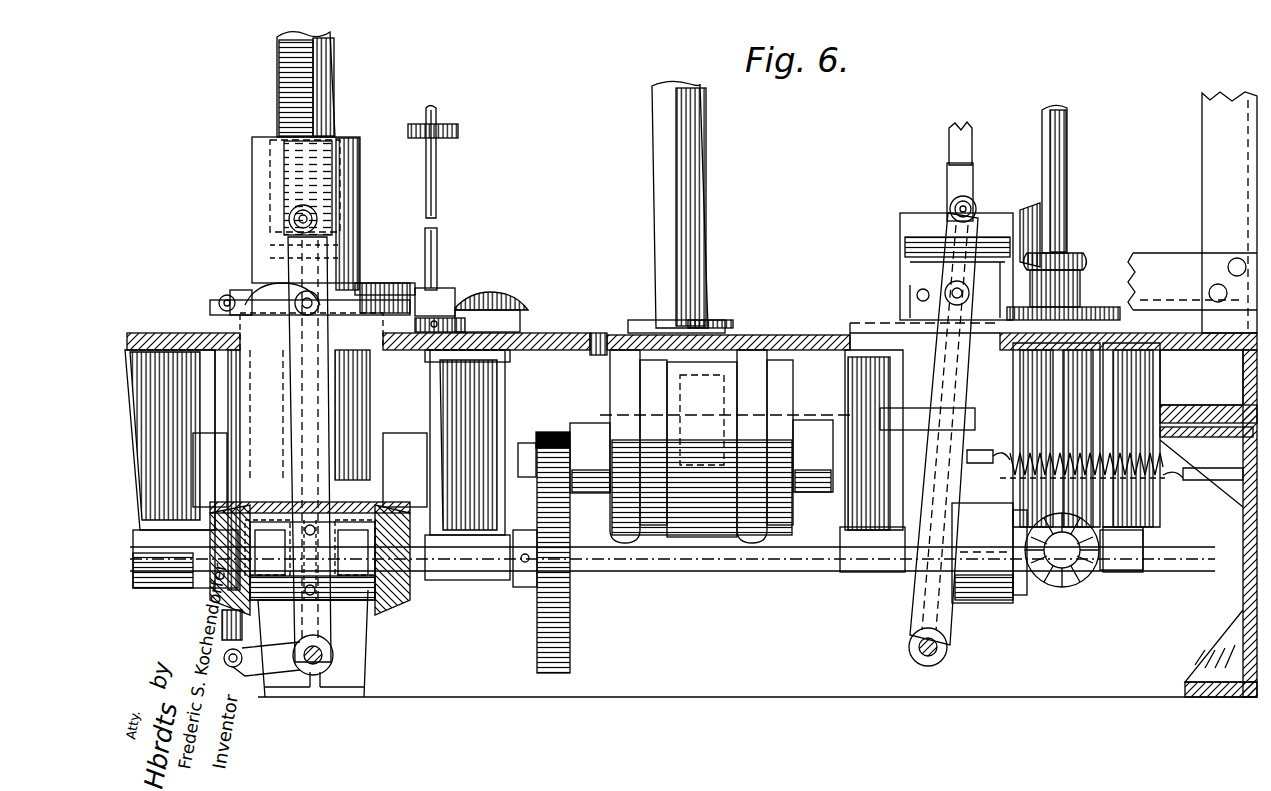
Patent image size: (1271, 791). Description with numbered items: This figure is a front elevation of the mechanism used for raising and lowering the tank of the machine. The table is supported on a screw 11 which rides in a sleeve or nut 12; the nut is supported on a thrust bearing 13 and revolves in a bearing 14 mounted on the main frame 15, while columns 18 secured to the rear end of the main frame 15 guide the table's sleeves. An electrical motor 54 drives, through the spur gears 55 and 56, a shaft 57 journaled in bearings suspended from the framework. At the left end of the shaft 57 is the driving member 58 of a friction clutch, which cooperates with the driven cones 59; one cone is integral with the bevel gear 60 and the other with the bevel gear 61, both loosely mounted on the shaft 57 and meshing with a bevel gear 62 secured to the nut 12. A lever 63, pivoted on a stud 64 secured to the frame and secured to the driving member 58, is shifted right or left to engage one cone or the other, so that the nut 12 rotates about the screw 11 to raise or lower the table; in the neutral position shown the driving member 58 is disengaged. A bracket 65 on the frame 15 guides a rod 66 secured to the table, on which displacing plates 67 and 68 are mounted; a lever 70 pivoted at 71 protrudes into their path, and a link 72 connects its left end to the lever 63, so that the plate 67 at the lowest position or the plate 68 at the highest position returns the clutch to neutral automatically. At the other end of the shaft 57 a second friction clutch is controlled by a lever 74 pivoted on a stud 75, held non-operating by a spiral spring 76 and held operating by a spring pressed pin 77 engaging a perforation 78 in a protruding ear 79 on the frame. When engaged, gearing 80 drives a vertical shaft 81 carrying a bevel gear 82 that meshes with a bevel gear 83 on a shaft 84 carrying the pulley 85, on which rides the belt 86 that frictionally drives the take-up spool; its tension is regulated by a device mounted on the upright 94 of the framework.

The screw 11 is at (275, 84).
The sleeve or nut 12 is at (255, 173).
The thrust bearing 13 is at (248, 300).
The bearing 14 is at (430, 380).
The main frame 15 is at (545, 333).
The column 18 is at (705, 178).
The electrical motor 54 is at (770, 350).
The spur gear 55 is at (549, 434).
The spur gear 56 is at (572, 607).
The shaft 57 is at (718, 572).
The driving member 58 is at (245, 505).
The driven cones 59 is at (268, 576).
The bevel gear 60 is at (390, 604).
The bevel gear 61 is at (217, 518).
The bevel gear 62 is at (380, 508).
The lever 63 is at (318, 224).
The stud 64 is at (334, 660).
The bracket 65 is at (486, 304).
The rod 66 is at (440, 250).
The displacing plate 67 is at (458, 130).
The displacing plate 68 is at (450, 292).
The lever 70 is at (380, 288).
The pivot 71 is at (290, 278).
The link 72 is at (238, 402).
The lever 74 is at (966, 232).
The stud 75 is at (948, 652).
The spiral spring 76 is at (1156, 482).
The spring pressed pin 77 is at (950, 290).
The perforation 78 is at (918, 293).
The protruding ear 79 is at (880, 330).
The gearing 80 is at (1062, 587).
The vertical shaft 81 is at (1068, 205).
The bevel gear 82 is at (1074, 260).
The bevel gear 83 is at (1030, 213).
The shaft 84 is at (900, 238).
The pulley 85 is at (946, 186).
The belt 86 is at (950, 146).
The upright 94 is at (1214, 170).